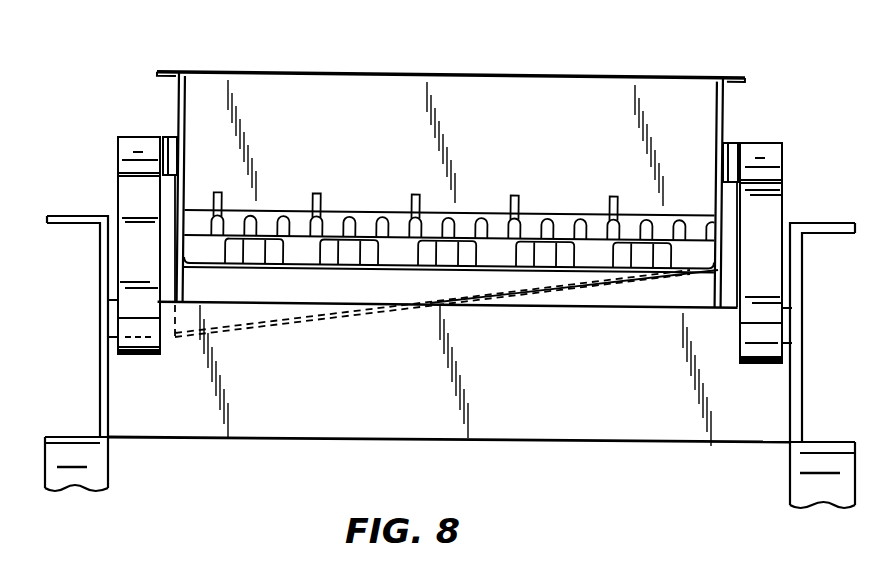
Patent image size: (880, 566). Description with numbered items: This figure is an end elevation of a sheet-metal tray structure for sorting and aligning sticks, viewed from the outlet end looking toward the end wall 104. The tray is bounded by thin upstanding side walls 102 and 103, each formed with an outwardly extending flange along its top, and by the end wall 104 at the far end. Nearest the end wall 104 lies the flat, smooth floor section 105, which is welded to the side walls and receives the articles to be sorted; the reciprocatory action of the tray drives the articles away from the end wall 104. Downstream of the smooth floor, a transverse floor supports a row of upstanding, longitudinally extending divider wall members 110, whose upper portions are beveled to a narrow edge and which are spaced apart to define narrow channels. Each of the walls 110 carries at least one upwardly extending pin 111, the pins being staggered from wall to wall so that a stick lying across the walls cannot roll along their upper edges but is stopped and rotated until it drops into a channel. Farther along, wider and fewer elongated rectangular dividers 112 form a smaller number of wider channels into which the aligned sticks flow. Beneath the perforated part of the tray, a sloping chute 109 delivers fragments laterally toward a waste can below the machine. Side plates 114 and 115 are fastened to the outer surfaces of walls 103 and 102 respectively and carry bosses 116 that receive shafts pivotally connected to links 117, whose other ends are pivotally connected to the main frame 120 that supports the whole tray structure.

The side wall 102 is at (717, 97).
The side wall 103 is at (186, 97).
The end wall 104 is at (460, 72).
The floor section 105 is at (532, 213).
The sloping chute 109 is at (250, 335).
The divider wall members 110 is at (682, 243).
The pin 111 is at (415, 193).
The dividers 112 is at (435, 237).
The side plate 114 is at (173, 257).
The side plate 115 is at (723, 270).
The bosses 116 is at (173, 137).
The links 117 is at (118, 190).
The main frame 120 is at (84, 336).